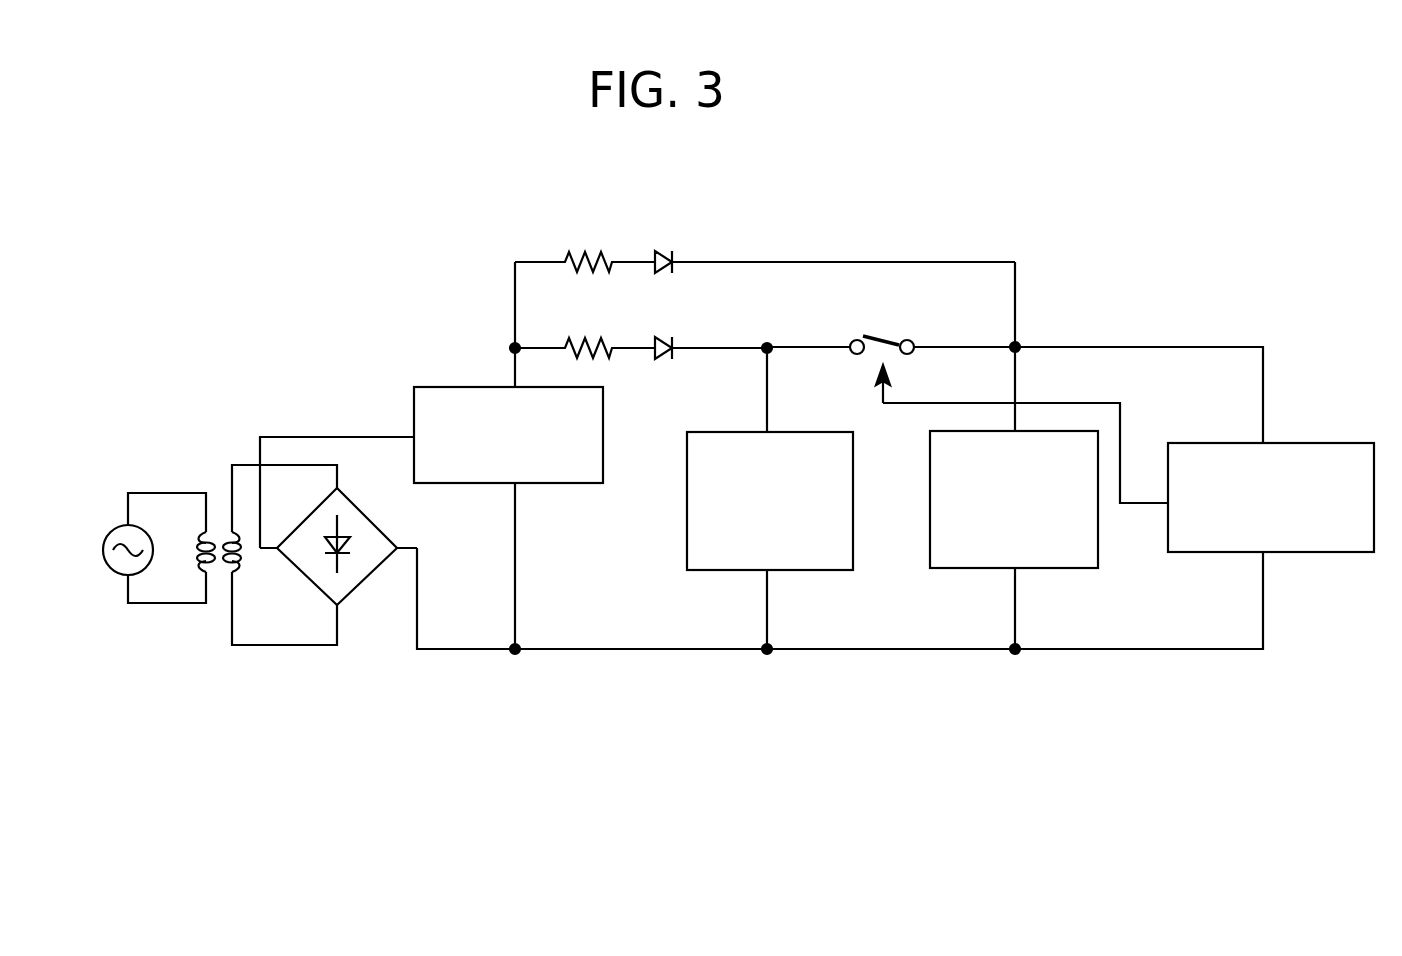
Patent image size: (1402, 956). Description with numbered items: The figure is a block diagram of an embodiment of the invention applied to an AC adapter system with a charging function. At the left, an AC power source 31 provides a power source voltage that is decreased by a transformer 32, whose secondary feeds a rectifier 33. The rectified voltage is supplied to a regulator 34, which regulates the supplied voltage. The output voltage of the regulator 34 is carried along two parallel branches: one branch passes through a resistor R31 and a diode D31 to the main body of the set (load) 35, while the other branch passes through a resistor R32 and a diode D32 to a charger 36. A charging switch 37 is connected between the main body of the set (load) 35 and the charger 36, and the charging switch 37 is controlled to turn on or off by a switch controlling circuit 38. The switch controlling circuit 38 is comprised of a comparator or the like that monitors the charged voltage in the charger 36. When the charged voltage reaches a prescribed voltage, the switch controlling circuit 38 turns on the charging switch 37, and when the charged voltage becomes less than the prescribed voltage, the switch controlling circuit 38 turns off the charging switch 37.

The AC power source 31 is at (110, 528).
The transformer 32 is at (215, 632).
The rectifier 33 is at (373, 525).
The regulator 34 is at (587, 485).
The main body of the set (load) 35 is at (830, 572).
The charger 36 is at (1078, 570).
The charging switch 37 is at (887, 332).
The switch controlling circuit 38 is at (1332, 553).
The resistor R31 is at (585, 334).
The resistor R32 is at (585, 246).
The diode D31 is at (703, 334).
The diode D32 is at (826, 247).